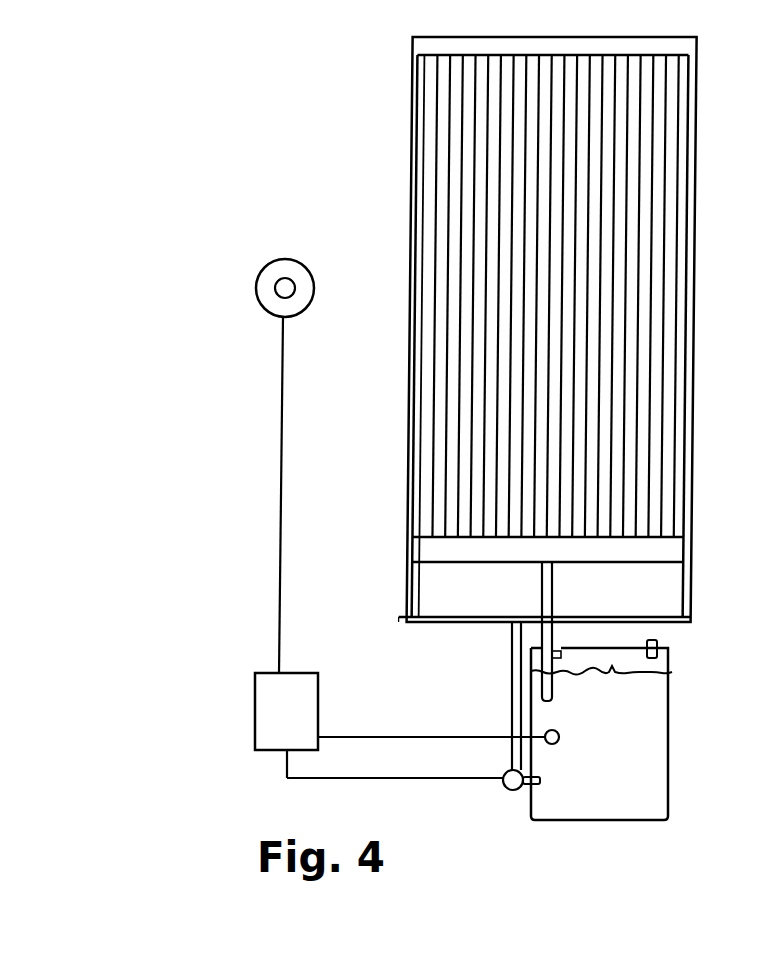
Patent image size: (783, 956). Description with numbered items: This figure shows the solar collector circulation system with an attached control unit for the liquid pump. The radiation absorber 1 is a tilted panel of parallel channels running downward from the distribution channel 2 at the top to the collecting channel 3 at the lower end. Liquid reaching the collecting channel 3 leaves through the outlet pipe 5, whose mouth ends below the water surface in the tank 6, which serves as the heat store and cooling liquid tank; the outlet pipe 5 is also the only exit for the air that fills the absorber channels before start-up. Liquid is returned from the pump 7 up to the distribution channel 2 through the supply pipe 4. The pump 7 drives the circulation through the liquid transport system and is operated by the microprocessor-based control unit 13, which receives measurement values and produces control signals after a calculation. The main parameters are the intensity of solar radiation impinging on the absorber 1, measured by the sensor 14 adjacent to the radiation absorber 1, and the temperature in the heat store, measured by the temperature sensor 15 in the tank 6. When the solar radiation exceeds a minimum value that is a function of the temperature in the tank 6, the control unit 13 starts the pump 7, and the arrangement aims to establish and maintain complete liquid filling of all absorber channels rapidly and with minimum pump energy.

The radiation absorber 1 is at (623, 281).
The distribution channel 2 is at (414, 42).
The collecting channel 3 is at (664, 550).
The supply pipe 4 is at (693, 597).
The outlet pipe 5 is at (547, 594).
The tank 6 is at (667, 754).
The pump 7 is at (508, 787).
The control unit 13 is at (259, 713).
The sensor 14 is at (282, 270).
The temperature sensor 15 is at (547, 731).